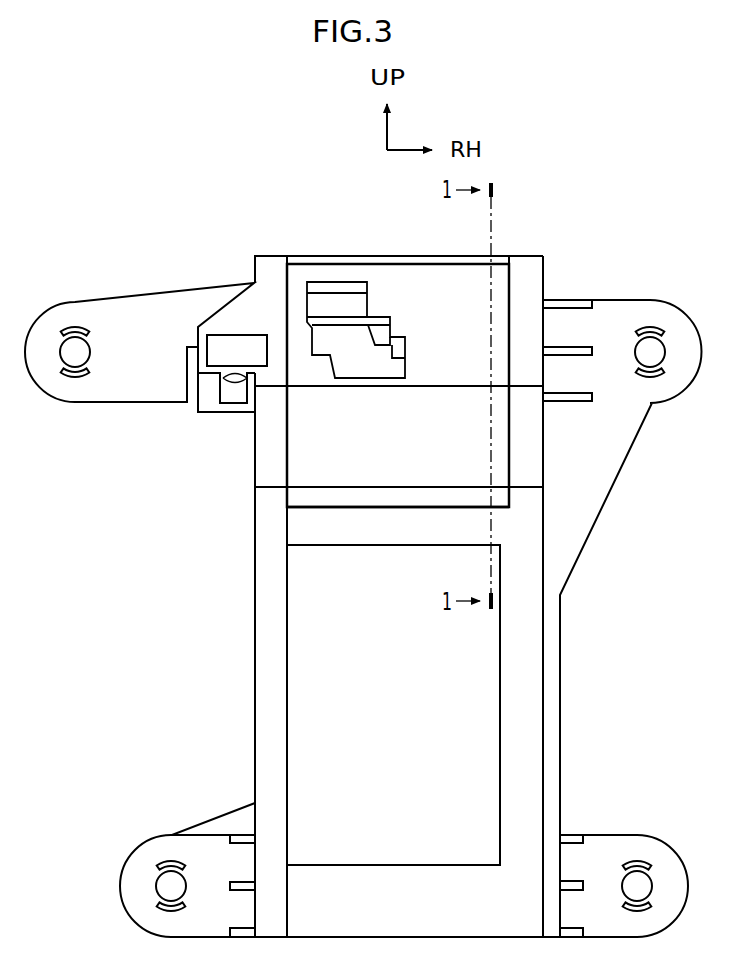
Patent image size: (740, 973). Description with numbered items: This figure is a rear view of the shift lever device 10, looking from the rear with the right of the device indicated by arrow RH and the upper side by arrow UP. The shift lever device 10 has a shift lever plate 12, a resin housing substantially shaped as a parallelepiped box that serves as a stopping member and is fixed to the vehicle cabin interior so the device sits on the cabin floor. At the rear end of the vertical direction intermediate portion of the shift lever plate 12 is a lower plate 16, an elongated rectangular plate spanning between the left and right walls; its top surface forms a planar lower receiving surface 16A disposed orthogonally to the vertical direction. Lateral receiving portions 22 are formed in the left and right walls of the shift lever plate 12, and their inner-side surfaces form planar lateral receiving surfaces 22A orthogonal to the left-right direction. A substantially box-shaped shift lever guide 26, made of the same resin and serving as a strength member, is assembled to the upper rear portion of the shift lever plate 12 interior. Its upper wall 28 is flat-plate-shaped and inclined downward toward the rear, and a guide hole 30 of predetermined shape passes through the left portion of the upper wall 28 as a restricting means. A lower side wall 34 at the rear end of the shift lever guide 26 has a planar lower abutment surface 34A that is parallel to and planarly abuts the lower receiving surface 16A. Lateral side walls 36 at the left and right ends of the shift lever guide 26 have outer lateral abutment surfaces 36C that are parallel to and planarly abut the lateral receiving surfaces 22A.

The shift lever device 10 is at (146, 204).
The shift lever plate 12 is at (246, 665).
The lower plate 16 is at (313, 528).
The lower receiving surface 16A is at (408, 495).
The lateral receiving portions 22 is at (253, 444).
The lateral receiving surfaces 22A is at (288, 459).
The shift lever guide 26 is at (280, 272).
The upper wall 28 is at (434, 277).
The guide hole 30 is at (336, 287).
The lower side wall 34 is at (352, 494).
The lower abutment surface 34A is at (445, 509).
The lateral side walls 36 is at (287, 320).
The lateral abutment surfaces 36C is at (287, 418).